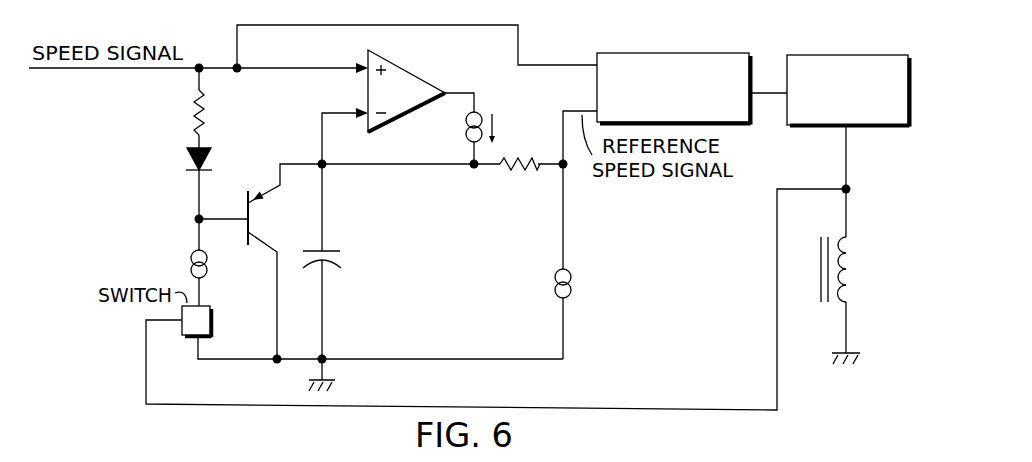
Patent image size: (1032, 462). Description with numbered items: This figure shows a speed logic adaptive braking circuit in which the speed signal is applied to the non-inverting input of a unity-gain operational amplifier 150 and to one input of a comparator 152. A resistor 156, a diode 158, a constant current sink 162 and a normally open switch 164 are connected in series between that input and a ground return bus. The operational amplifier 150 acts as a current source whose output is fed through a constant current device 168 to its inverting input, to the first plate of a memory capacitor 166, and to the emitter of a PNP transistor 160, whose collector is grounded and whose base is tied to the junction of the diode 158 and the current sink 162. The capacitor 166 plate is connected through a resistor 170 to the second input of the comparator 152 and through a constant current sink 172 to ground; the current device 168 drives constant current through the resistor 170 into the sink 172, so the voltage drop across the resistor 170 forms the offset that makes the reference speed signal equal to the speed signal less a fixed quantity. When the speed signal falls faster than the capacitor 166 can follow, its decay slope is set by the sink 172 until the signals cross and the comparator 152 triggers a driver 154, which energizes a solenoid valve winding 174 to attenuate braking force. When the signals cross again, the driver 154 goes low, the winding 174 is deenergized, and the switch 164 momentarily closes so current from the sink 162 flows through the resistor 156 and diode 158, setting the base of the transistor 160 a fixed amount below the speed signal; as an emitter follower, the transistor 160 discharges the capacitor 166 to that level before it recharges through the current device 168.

The operational amplifier 150 is at (398, 63).
The comparator 152 is at (665, 52).
The driver 154 is at (885, 130).
The resistor 156 is at (193, 110).
The diode 158 is at (187, 158).
The PNP transistor 160 is at (253, 210).
The constant current sink 162 is at (190, 264).
The normally open switch 164 is at (213, 317).
The memory capacitor 166 is at (335, 258).
The constant current device 168 is at (465, 126).
The resistor 170 is at (514, 172).
The constant current sink 172 is at (571, 288).
The solenoid valve winding 174 is at (840, 262).